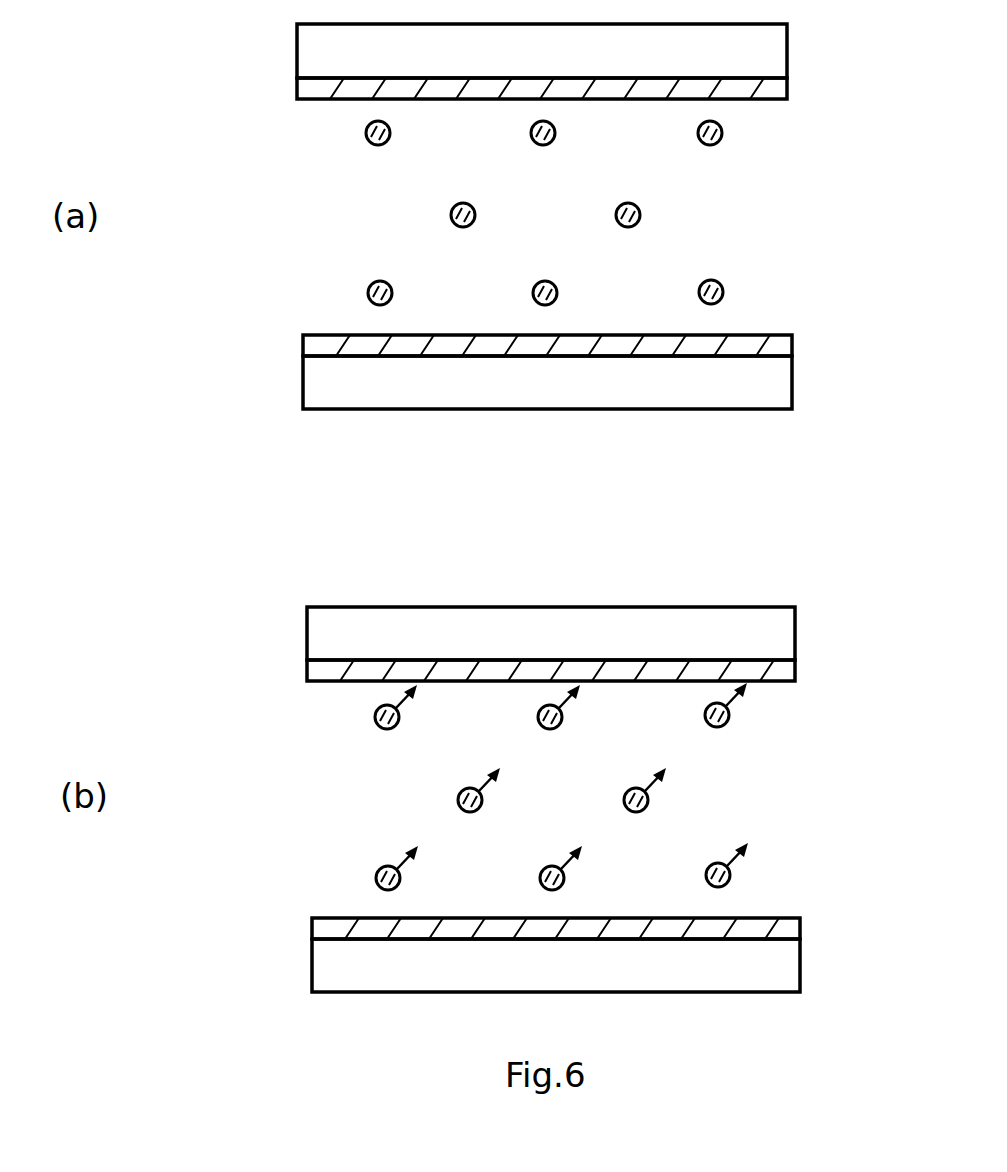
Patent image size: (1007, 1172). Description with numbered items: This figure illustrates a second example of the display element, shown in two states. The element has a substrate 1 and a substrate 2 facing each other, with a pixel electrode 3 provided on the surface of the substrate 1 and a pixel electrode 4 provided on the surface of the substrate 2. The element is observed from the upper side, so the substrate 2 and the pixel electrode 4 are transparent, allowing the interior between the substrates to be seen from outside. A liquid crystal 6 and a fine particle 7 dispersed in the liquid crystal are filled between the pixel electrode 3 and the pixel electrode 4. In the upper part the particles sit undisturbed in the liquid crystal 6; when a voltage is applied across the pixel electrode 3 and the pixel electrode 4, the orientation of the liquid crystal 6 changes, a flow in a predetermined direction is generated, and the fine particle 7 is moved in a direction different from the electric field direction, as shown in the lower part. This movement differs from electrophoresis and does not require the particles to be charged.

The substrate 1 is at (777, 388).
The substrate 2 is at (773, 41).
The pixel electrode 3 is at (785, 326).
The pixel electrode 4 is at (773, 85).
The liquid crystal 6 is at (395, 193).
The fine particle 7 is at (368, 296).